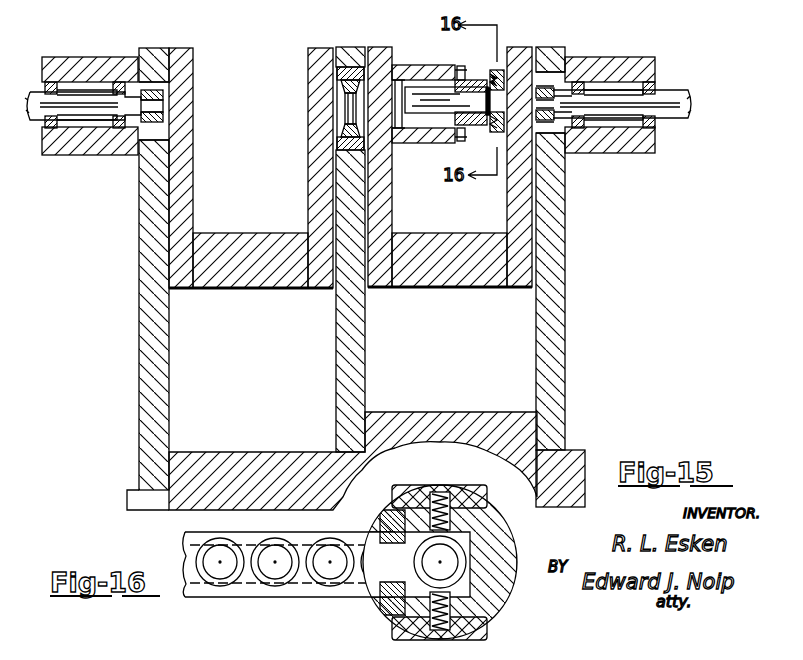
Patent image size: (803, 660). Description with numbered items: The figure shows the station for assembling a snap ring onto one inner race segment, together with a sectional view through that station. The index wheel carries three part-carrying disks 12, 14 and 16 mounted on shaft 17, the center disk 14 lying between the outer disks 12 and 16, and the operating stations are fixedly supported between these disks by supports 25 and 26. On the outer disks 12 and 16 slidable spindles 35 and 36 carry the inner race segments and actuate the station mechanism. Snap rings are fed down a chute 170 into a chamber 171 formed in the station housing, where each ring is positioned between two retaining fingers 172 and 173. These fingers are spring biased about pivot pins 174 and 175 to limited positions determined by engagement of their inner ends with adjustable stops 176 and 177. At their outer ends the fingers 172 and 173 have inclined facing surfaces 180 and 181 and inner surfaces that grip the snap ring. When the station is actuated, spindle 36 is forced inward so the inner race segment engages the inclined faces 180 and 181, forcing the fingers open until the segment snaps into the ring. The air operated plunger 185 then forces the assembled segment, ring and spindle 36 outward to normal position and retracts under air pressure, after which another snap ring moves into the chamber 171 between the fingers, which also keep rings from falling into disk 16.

In FIG. 15, the part-carrying disk 12 is at (146, 334).
In FIG. 15, the center disk 14 is at (358, 356).
In FIG. 15, the part-carrying disk 16 is at (562, 322).
In FIG. 15, the shaft 17 is at (264, 463).
In FIG. 15, the support 25 is at (183, 211).
In FIG. 15, the support 26 is at (378, 211).
In FIG. 15, the spindle 35 is at (40, 108).
In FIG. 15, the spindle 36 is at (673, 105).
In FIG. 16, the chute 170 is at (247, 596).
In FIG. 16, the chamber 171 is at (465, 543).
In FIG. 15, the retaining finger 172 is at (492, 131).
In FIG. 16, the retaining finger 172 is at (465, 600).
In FIG. 15, the retaining finger 173 is at (481, 84).
In FIG. 16, the retaining finger 173 is at (470, 515).
In FIG. 15, the pivot pin 174 is at (458, 83).
In FIG. 15, the pivot pin 175 is at (470, 125).
In FIG. 15, the adjustable stop 176 is at (422, 100).
In FIG. 15, the adjustable stop 177 is at (453, 136).
In FIG. 15, the inclined facing surface 180 is at (505, 98).
In FIG. 15, the inclined facing surface 181 is at (506, 116).
In FIG. 15, the air operated plunger 185 is at (412, 82).